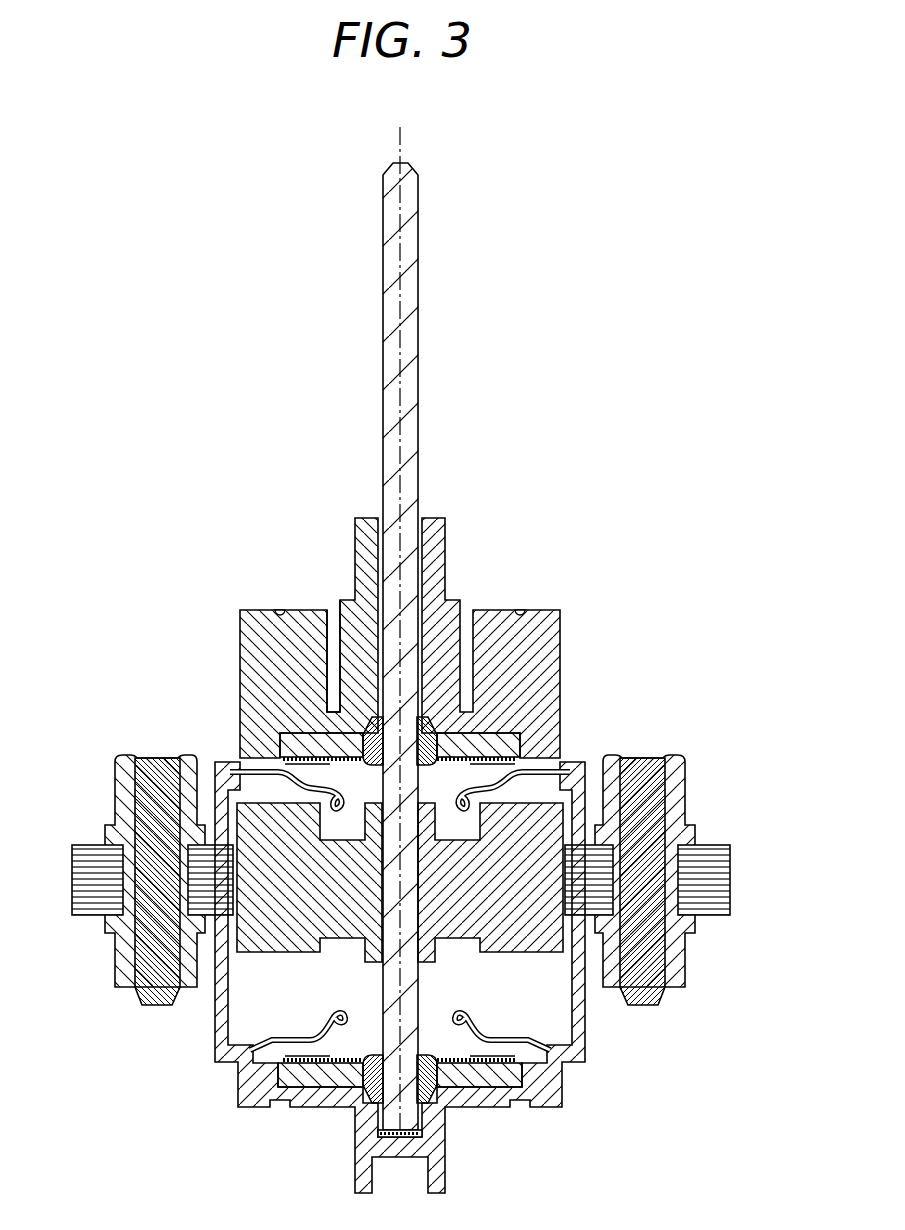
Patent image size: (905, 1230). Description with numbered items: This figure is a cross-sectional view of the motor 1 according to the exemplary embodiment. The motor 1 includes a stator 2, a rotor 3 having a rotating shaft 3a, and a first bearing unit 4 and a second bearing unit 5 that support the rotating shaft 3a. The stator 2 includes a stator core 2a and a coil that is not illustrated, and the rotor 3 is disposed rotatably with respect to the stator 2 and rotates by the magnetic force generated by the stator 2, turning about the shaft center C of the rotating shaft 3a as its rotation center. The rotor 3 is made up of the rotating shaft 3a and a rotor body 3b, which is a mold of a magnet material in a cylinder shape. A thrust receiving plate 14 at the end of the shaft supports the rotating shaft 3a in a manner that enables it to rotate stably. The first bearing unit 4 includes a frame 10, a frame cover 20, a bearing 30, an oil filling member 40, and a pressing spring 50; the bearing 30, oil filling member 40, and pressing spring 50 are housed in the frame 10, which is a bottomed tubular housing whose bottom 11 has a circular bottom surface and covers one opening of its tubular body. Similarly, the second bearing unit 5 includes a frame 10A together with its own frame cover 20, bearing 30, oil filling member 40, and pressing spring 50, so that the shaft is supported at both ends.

The motor 1 is at (148, 240).
The shaft center C is at (400, 142).
The stator 2 is at (705, 843).
The stator core 2a is at (723, 878).
The rotor 3 is at (636, 653).
The rotating shaft 3a is at (407, 625).
The rotor body 3b is at (527, 820).
The first bearing unit 4 is at (85, 572).
The second bearing unit 5 is at (85, 1020).
The frame 10 is at (284, 657).
The frame 10A is at (310, 1100).
The bottom 11 is at (357, 716).
The thrust receiving plate 14 is at (432, 1122).
The frame cover 20 is at (330, 792).
The bearing 30 is at (348, 745).
The oil filling member 40 is at (332, 759).
The pressing spring 50 is at (305, 768).